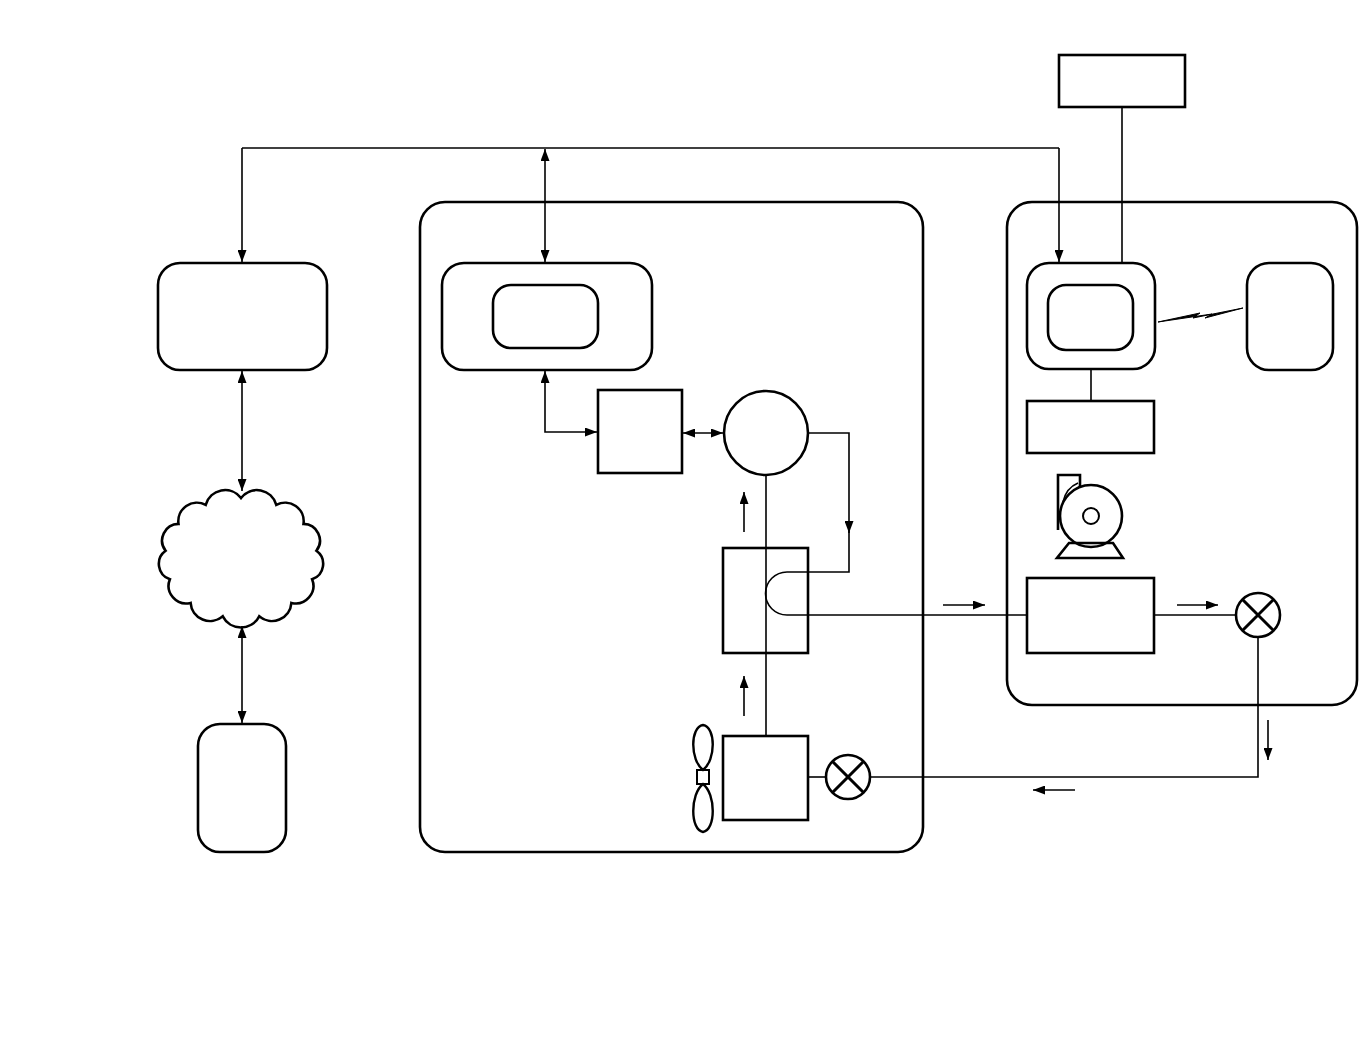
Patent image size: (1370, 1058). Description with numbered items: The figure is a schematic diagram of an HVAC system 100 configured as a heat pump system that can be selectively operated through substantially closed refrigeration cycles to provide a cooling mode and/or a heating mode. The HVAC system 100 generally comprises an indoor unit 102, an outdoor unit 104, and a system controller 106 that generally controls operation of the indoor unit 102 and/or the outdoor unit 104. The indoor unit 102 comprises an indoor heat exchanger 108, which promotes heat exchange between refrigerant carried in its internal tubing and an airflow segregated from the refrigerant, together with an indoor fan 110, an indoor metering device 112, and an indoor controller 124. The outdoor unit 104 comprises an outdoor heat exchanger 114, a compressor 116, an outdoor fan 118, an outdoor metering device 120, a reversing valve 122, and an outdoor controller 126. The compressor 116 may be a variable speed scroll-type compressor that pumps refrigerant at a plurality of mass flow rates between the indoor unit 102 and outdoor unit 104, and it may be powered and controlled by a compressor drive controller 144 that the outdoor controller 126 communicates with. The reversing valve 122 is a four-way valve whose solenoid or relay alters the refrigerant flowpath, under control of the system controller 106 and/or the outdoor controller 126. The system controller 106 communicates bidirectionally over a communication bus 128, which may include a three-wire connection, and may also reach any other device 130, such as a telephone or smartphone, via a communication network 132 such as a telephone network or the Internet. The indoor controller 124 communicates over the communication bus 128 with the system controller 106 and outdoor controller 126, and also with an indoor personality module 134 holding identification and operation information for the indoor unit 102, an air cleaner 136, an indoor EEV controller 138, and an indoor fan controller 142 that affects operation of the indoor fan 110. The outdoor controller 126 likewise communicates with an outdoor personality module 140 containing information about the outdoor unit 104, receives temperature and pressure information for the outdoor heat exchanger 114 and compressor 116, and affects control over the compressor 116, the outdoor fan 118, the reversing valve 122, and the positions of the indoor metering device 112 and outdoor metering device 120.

The HVAC system 100 is at (398, 96).
The indoor unit 102 is at (1259, 201).
The outdoor unit 104 is at (419, 252).
The system controller 106 is at (217, 331).
The indoor heat exchanger 108 is at (1066, 630).
The indoor fan 110 is at (1122, 515).
The indoor metering device 112 is at (1272, 636).
The outdoor heat exchanger 114 is at (741, 793).
The compressor 116 is at (741, 448).
The outdoor fan 118 is at (695, 777).
The outdoor metering device 120 is at (861, 795).
The reversing valve 122 is at (809, 630).
The indoor controller 124 is at (1156, 297).
The outdoor controller 126 is at (492, 262).
The communication bus 128 is at (635, 148).
The other device 130 is at (217, 803).
The communication network 132 is at (217, 573).
The indoor personality module 134 is at (1066, 333).
The air cleaner 136 is at (1097, 96).
The indoor EEV controller 138 is at (1265, 331).
The outdoor personality module 140 is at (520, 331).
The indoor fan controller 142 is at (1066, 442).
The compressor drive controller 144 is at (615, 447).